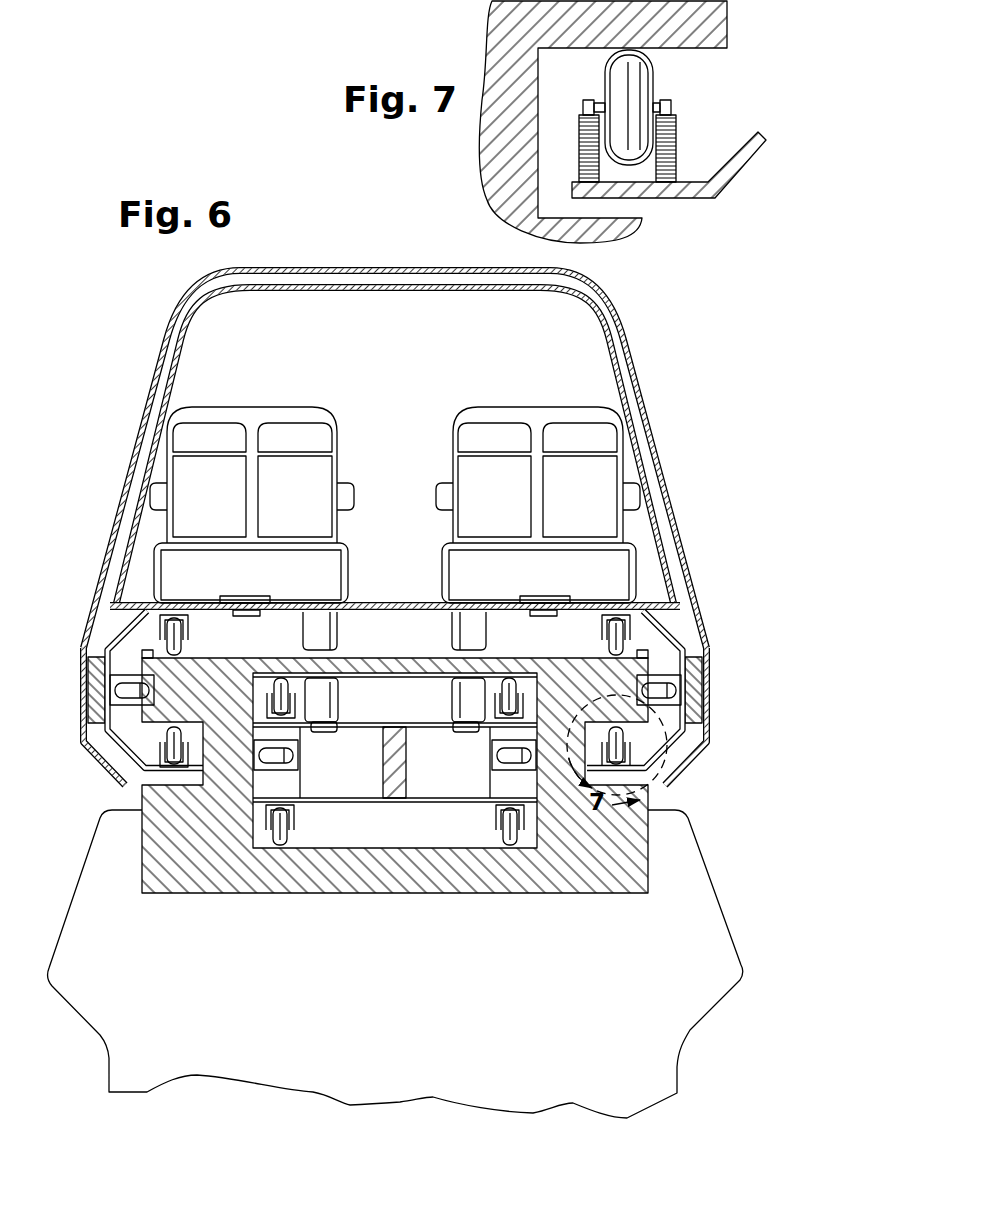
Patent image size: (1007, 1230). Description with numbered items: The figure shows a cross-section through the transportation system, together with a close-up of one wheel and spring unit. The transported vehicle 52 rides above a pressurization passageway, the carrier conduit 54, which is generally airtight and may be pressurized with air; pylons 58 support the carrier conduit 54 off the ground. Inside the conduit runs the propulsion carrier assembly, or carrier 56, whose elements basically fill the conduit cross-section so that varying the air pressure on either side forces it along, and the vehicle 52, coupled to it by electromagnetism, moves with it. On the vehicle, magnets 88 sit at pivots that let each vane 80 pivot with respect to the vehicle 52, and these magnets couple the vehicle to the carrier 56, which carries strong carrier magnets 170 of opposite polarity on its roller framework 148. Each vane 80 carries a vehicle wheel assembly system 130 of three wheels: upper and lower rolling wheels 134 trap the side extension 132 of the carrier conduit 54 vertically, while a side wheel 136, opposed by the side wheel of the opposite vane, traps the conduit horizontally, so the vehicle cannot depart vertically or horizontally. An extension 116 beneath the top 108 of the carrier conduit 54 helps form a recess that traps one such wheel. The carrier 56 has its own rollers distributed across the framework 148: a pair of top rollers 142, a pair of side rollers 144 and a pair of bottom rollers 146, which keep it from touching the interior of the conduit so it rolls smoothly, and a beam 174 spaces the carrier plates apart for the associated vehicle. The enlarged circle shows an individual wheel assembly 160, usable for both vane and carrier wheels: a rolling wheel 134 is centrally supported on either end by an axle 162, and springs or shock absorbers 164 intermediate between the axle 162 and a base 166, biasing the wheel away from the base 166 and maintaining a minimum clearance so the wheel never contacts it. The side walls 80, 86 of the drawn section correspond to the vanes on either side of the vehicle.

In FIG. 6, the transported vehicle 52 is at (724, 456).
In FIG. 6, the carrier conduit 54 is at (395, 789).
In FIG. 6, the propulsion carrier assembly 56 is at (395, 789).
In FIG. 6, the pylons 58 is at (372, 1027).
In FIG. 6, the vane 80 is at (92, 757).
In FIG. 6, the right side wall 86 is at (712, 690).
In FIG. 6, the magnets 88 is at (331, 637).
In FIG. 6, the top of the carrier conduit 108 is at (204, 658).
In FIG. 6, the vehicle wheel assembly system 130 is at (711, 662).
In FIG. 6, the side extension of the carrier conduit 132 is at (664, 628).
In FIG. 6, the rolling wheel 134 is at (170, 648).
In FIG. 7, the rolling wheel 134 is at (638, 76).
In FIG. 6, the side wheel 136 is at (138, 688).
In FIG. 6, the top rollers 142 is at (422, 739).
In FIG. 6, the side rollers 144 is at (292, 761).
In FIG. 6, the bottom rollers 146 is at (280, 836).
In FIG. 6, the framework 148 is at (348, 801).
In FIG. 6, the carrier magnets 170 is at (327, 700).
In FIG. 6, the beam 174 is at (399, 748).
In FIG. 7, the extension 116 is at (513, 47).
In FIG. 7, the wheel assembly 160 is at (701, 144).
In FIG. 7, the axle 162 is at (658, 102).
In FIG. 7, the springs and/or shock absorbers 164 is at (585, 147).
In FIG. 7, the base 166 is at (653, 193).